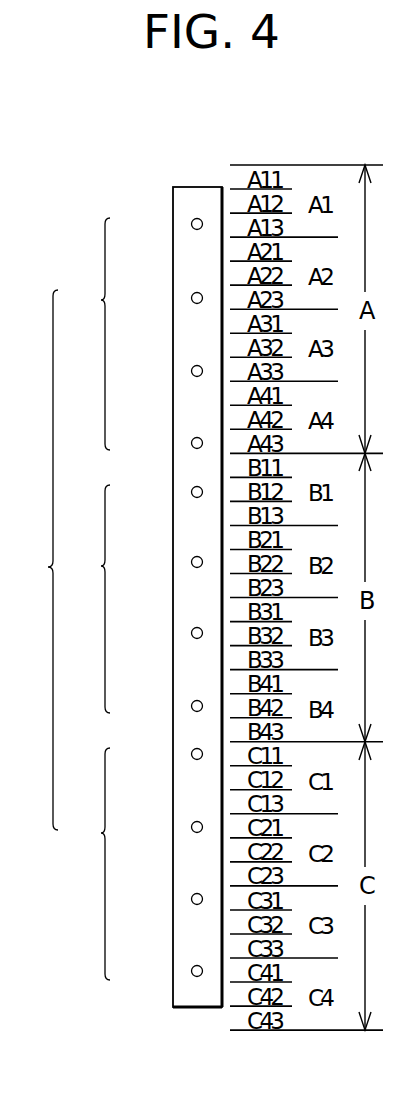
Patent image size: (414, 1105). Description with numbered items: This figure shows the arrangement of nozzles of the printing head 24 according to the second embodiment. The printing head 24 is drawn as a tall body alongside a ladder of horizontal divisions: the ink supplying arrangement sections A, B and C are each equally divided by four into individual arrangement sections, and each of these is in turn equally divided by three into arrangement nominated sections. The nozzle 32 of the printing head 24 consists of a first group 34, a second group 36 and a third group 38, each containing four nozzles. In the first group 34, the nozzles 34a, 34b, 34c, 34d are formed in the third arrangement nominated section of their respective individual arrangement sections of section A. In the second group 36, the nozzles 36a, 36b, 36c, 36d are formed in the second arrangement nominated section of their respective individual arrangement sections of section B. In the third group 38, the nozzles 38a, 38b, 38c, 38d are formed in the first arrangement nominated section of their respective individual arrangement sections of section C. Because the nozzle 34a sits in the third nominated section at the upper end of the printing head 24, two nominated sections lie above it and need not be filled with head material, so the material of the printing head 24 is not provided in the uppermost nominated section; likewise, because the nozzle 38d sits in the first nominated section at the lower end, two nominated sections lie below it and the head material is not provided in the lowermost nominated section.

The printing head 24 is at (193, 184).
The nozzle 32 is at (36, 560).
The first group 34 is at (89, 334).
The nozzle 34a is at (192, 224).
The nozzle 34b is at (192, 298).
The nozzle 34c is at (192, 371).
The nozzle 34d is at (192, 443).
The second group 36 is at (90, 599).
The nozzle 36a is at (192, 492).
The nozzle 36b is at (192, 562).
The nozzle 36c is at (192, 633).
The nozzle 36d is at (192, 706).
The third group 38 is at (89, 864).
The nozzle 38a is at (192, 754).
The nozzle 38b is at (192, 827).
The nozzle 38c is at (192, 899).
The nozzle 38d is at (192, 971).